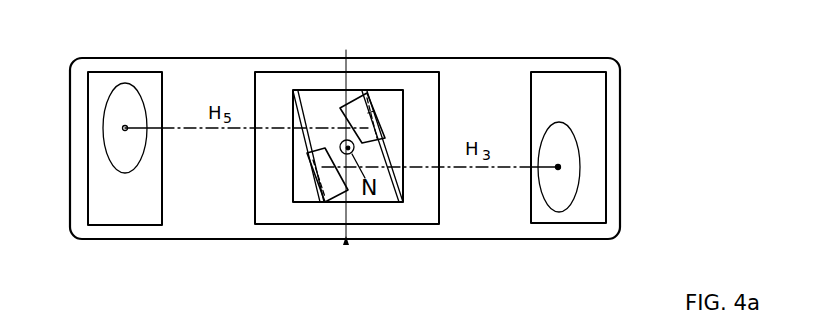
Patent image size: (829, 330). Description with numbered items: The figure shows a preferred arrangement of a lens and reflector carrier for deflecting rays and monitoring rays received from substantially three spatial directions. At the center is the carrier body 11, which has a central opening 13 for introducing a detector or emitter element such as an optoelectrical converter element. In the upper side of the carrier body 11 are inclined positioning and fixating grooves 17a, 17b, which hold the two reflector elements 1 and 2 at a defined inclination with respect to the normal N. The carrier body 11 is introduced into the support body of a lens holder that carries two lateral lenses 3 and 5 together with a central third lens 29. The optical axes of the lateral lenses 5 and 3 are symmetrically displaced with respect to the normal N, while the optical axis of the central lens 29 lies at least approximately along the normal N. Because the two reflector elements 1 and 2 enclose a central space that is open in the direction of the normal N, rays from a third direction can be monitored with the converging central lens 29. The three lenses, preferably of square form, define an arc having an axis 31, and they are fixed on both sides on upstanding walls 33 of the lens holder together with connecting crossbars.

The reflector element 1 is at (330, 186).
The reflector element 2 is at (373, 112).
The lateral lens 3 is at (567, 87).
The lateral lens 5 is at (146, 80).
The carrier body 11 is at (320, 102).
The central opening 13 is at (340, 143).
The positioning and fixating groove 17a is at (398, 183).
The positioning and fixating groove 17b is at (304, 141).
The central third lens 29 is at (413, 213).
The axis 31 is at (348, 242).
The upstanding wall 33 is at (488, 58).